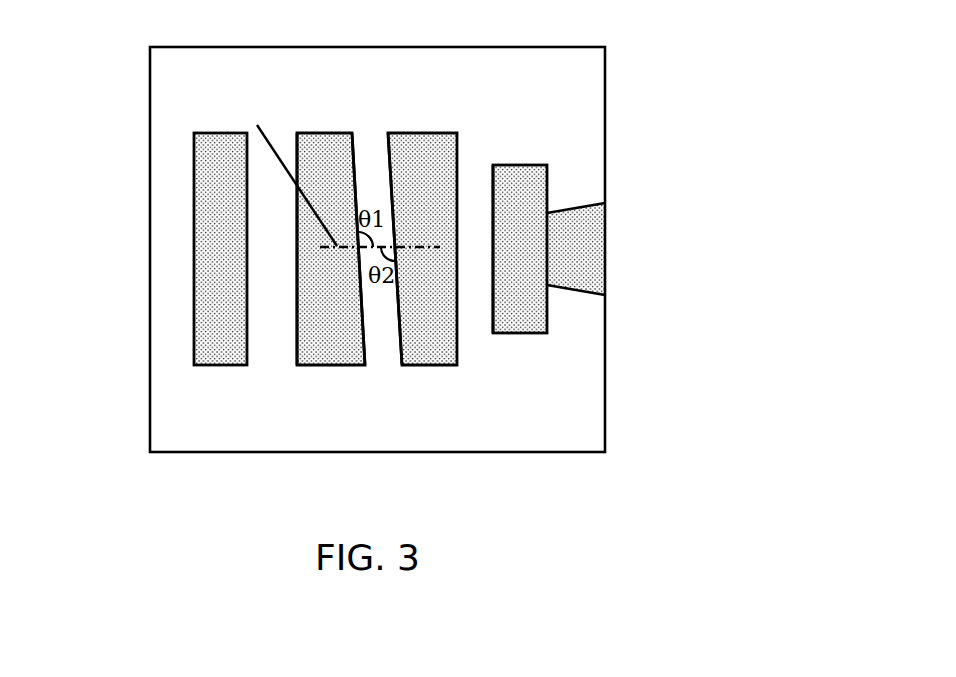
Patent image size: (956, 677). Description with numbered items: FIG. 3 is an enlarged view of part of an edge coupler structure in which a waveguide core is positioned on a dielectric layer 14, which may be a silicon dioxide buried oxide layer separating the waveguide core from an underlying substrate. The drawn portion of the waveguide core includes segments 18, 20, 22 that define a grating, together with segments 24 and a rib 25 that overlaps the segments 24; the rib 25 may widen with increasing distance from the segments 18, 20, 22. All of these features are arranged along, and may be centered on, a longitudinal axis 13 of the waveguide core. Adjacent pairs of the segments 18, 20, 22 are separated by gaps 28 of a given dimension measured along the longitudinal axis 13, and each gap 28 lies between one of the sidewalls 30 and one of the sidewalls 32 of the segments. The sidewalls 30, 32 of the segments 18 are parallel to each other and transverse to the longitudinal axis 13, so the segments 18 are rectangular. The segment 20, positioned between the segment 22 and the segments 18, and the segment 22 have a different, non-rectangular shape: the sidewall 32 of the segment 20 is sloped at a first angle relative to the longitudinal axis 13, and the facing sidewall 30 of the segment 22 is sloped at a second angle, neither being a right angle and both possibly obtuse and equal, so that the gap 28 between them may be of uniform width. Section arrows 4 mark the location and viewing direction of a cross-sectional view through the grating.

The section line for FIG. 4 is at (303, 10).
The longitudinal axis 13 is at (284, 172).
The dielectric layer 14 is at (557, 412).
The segments 18 is at (220, 182).
The segment 20 is at (310, 242).
The segment 22 is at (427, 155).
The segments 24 is at (527, 278).
The rib 25 is at (580, 235).
The gaps 28 is at (425, 104).
The sidewalls 30 is at (295, 340).
The sidewalls 32 is at (458, 202).